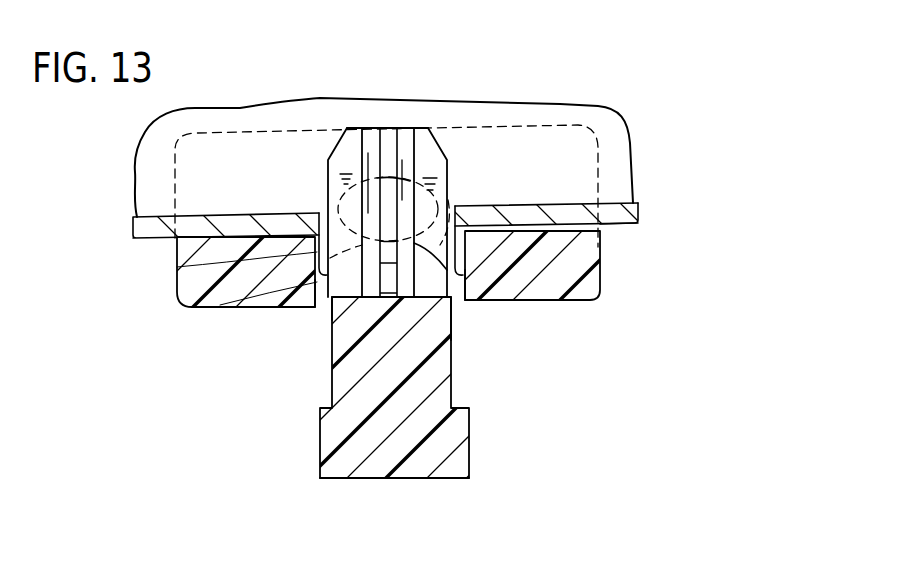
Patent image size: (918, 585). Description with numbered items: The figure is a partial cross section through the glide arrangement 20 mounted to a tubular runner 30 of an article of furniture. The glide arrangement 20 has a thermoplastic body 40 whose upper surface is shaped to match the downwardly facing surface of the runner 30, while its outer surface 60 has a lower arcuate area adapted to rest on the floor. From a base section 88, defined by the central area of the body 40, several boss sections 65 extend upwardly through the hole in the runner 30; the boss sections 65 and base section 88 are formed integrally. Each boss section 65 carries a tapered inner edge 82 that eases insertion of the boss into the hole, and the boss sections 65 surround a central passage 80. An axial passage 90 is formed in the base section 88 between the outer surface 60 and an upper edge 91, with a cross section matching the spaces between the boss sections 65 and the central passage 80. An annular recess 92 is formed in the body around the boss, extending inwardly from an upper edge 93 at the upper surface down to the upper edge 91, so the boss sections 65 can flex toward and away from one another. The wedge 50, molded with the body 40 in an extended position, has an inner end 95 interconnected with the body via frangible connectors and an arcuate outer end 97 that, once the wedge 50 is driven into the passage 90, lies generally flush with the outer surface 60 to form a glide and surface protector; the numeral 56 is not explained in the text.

The glide arrangement 20 is at (508, 118).
The runner 30 is at (617, 225).
The body 40 is at (603, 140).
The wedge 50 is at (471, 442).
The flange 56 is at (406, 218).
The outer surface 60 is at (503, 302).
The boss sections 65 is at (346, 132).
The central passage 80 is at (385, 150).
The tapered inner edge 82 is at (327, 142).
The base section 88 is at (218, 306).
The passage 90 is at (457, 305).
The upper edge 91 is at (448, 200).
The annular recess 92 is at (177, 267).
The upper edge 93 is at (345, 198).
The inner end 95 is at (313, 307).
The outer end 97 is at (411, 478).